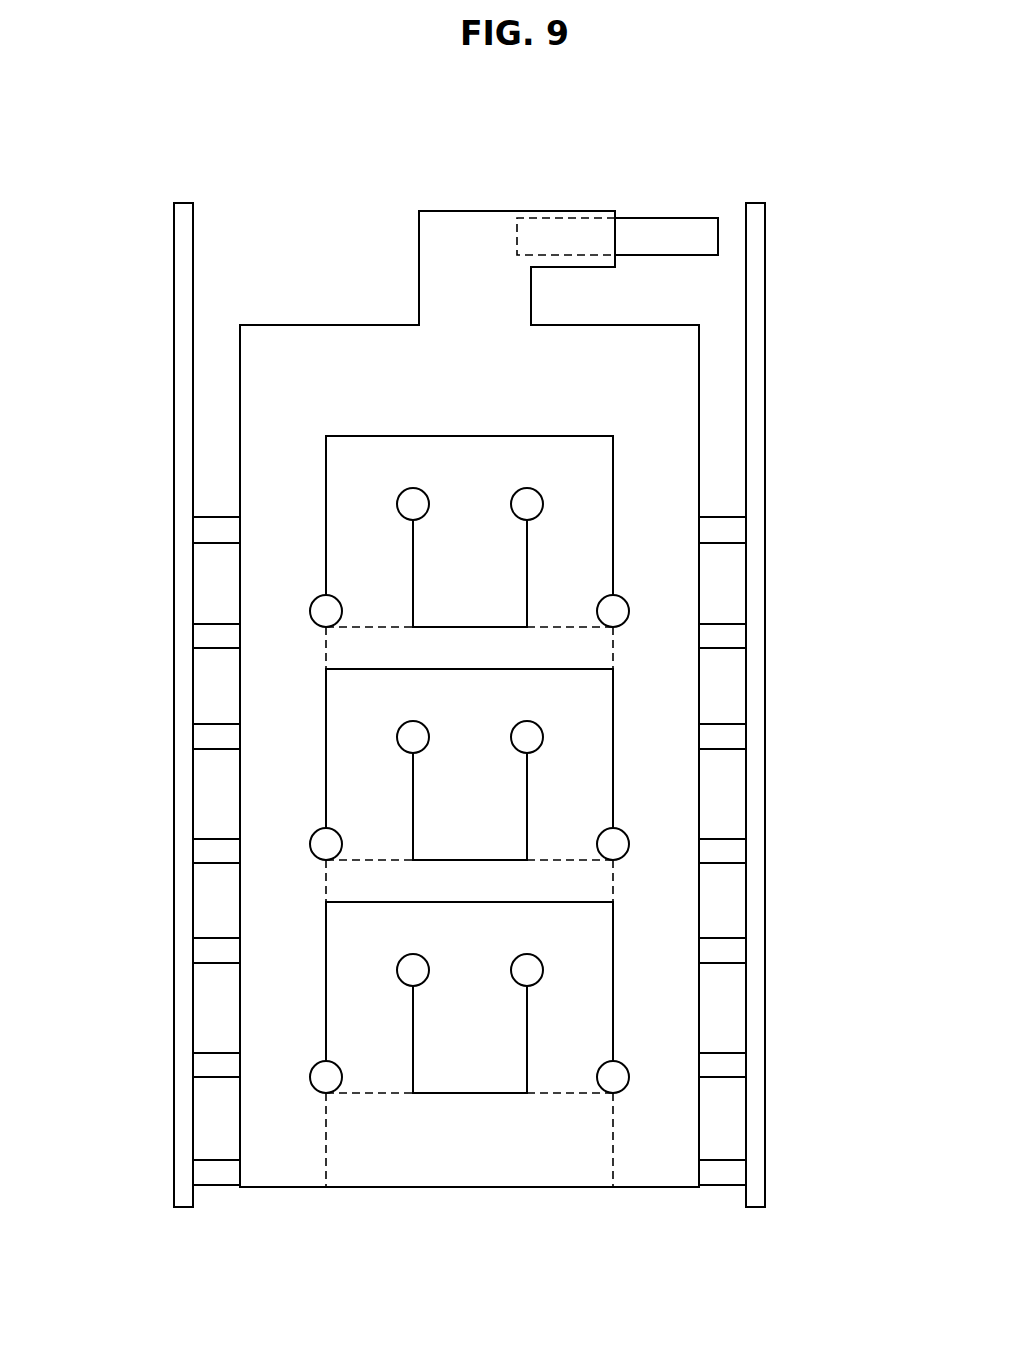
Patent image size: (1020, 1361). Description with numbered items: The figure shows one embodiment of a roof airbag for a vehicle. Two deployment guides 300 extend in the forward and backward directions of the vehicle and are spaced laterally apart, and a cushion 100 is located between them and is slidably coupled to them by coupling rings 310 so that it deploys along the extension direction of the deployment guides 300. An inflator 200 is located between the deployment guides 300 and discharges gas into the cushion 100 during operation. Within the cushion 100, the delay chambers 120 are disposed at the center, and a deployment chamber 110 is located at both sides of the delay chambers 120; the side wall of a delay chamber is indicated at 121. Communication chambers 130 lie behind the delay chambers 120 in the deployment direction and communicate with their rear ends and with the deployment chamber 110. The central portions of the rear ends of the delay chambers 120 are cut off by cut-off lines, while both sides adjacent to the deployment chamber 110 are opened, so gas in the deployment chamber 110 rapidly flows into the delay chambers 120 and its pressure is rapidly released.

The cushion 100 is at (478, 757).
The deployment chamber 110 is at (659, 465).
The delay chambers 120 is at (335, 764).
The cell unit side wall 121 is at (363, 559).
The communication chambers 130 is at (582, 643).
The inflator 200 is at (666, 218).
The deployment guides 300 is at (765, 272).
The coupling rings 310 is at (215, 1188).